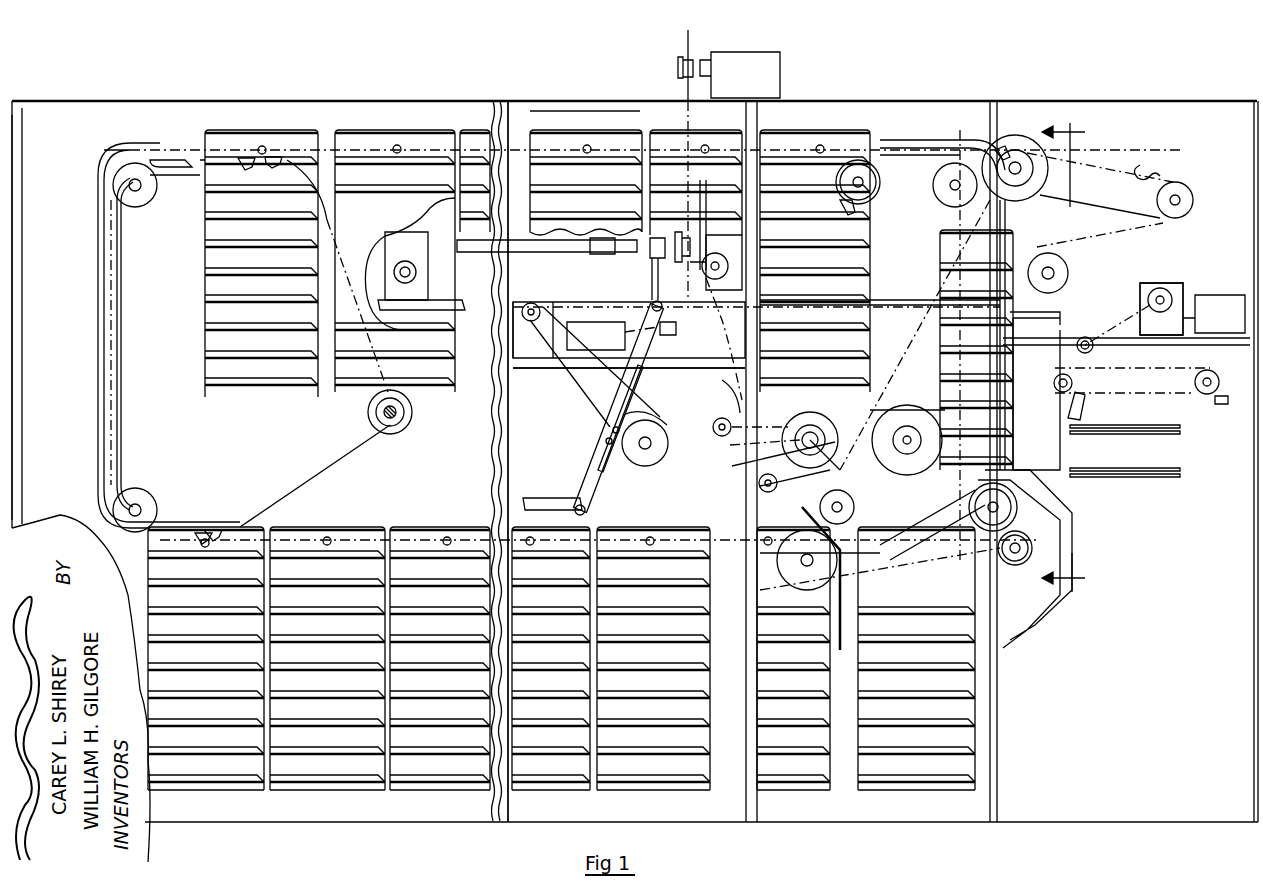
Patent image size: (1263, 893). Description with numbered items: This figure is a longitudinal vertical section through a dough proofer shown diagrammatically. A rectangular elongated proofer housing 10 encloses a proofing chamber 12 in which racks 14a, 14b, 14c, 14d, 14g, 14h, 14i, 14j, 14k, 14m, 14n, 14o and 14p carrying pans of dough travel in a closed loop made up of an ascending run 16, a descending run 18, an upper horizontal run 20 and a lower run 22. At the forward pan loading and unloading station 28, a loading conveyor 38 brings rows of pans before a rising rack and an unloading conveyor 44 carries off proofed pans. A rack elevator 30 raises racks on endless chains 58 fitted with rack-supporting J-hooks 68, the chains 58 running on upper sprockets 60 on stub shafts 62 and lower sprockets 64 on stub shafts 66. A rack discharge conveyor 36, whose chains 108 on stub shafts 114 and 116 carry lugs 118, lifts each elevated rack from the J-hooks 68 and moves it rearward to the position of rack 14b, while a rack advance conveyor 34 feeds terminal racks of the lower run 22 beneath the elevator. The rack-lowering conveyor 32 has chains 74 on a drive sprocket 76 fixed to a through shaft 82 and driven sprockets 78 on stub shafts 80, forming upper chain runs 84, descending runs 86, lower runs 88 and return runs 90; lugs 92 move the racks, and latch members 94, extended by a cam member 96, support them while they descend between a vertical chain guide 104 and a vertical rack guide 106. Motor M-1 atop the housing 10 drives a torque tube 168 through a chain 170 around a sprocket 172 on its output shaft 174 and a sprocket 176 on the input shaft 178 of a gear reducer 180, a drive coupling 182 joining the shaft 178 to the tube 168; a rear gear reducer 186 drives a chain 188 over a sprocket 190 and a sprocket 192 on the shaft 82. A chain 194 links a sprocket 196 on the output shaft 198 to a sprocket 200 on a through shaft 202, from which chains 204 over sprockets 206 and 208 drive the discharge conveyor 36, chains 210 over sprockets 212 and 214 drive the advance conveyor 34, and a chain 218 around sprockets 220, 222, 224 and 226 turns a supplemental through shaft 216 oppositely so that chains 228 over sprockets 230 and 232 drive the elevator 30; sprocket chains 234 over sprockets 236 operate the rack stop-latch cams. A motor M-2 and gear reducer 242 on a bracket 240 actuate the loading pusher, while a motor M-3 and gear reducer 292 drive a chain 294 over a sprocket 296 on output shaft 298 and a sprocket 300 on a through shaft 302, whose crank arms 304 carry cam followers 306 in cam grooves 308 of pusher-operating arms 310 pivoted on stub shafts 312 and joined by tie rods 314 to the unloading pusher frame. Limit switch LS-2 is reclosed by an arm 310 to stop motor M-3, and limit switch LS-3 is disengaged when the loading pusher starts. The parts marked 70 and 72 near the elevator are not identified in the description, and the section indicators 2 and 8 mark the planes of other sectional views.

The machine frame 10 is at (404, 103).
The partition 12 is at (527, 108).
The tray 14a is at (1056, 455).
The tray 14b is at (790, 132).
The tray 14c is at (658, 132).
The tray 14d is at (610, 124).
The tray 14g is at (422, 132).
The tray 14h is at (314, 124).
The tray 14i is at (204, 790).
The tray 14j is at (329, 790).
The tray 14k is at (443, 790).
The tray 14m is at (563, 790).
The tray 14n is at (672, 790).
The tray 14o is at (815, 790).
The tray 14p is at (955, 790).
The tray column 16 is at (937, 242).
The left frame section 18 is at (83, 331).
The tray rail 20 is at (580, 127).
The drive section 22 is at (650, 518).
The transfer station 28 is at (1122, 304).
The arm 30 is at (1115, 172).
The guide rail 32 is at (158, 147).
The lever 34 is at (888, 557).
The curved guide 36 is at (932, 144).
The rails 38 is at (1125, 415).
The rails 44 is at (1125, 458).
The link 58 is at (1130, 232).
The wheel rim 60 is at (1030, 182).
The hub 62 is at (1020, 170).
The roller rim 64 is at (1015, 518).
The roller 66 is at (1022, 550).
The hook 68 is at (1150, 168).
The pulley 70 is at (1158, 200).
The pulley 72 is at (1068, 270).
The link 74 is at (368, 449).
The wheel 76 is at (370, 422).
The sprocket 78 is at (140, 207).
The shaft 80 is at (140, 188).
The hub 82 is at (393, 417).
The bar 84 is at (197, 162).
The chain run 86 is at (120, 296).
The bar 88 is at (170, 524).
The link rod 90 is at (338, 468).
The pawl 92 is at (272, 158).
The pawl 94 is at (248, 158).
The pusher 96 is at (170, 158).
The chain 104 is at (112, 340).
The chain guide 106 is at (97, 432).
The guide bar 108 is at (888, 142).
The shaft 114 is at (852, 185).
The roller 116 is at (950, 188).
The pawl 118 is at (850, 214).
The rod 168 is at (565, 252).
The shaft line 170 is at (680, 116).
The switch 172 is at (680, 78).
The shaft 174 is at (688, 56).
The coupling 176 is at (678, 240).
The rod 178 is at (700, 235).
The housing 180 is at (740, 240).
The block 182 is at (652, 255).
The bracket 186 is at (402, 238).
The base 188 is at (410, 300).
The roller 190 is at (416, 272).
The wheel 192 is at (412, 416).
The link 194 is at (720, 318).
The pulley 196 is at (728, 268).
The rod 198 is at (652, 283).
The roller 200 is at (780, 480).
The link 202 is at (790, 458).
The rod 204 is at (828, 260).
The lever 206 is at (812, 432).
The roller 208 is at (838, 180).
The roller 210 is at (850, 505).
The wheel 212 is at (822, 433).
The roller 214 is at (1010, 503).
The hub 216 is at (912, 441).
The arm 218 is at (740, 413).
The link 220 is at (760, 443).
The lever 222 is at (900, 405).
The roller 224 is at (722, 424).
The link 226 is at (790, 483).
The link 228 is at (936, 294).
The wheel 230 is at (908, 426).
The wheel 232 is at (1020, 136).
The plate 234 is at (1010, 590).
The wheel 236 is at (802, 588).
The rod 240 is at (1170, 344).
The drive unit 242 is at (1140, 283).
The plate 292 is at (532, 362).
The cylinder 294 is at (640, 420).
The links 296 is at (545, 318).
The pivot 298 is at (531, 308).
The wheel 300 is at (640, 462).
The shaft 302 is at (650, 450).
The arm 304 is at (662, 416).
The pin 306 is at (612, 430).
The pin 308 is at (606, 442).
The lever 310 is at (590, 470).
The box 312 is at (580, 400).
The lever 314 is at (580, 505).
The section line 2 is at (1071, 355).
The section line 8 is at (783, 505).
The motor M-1 is at (780, 58).
The motor M-2 is at (1215, 295).
The motor M-3 is at (598, 352).
The limit switch LS-2 is at (662, 341).
The limit switch LS-3 is at (1220, 400).